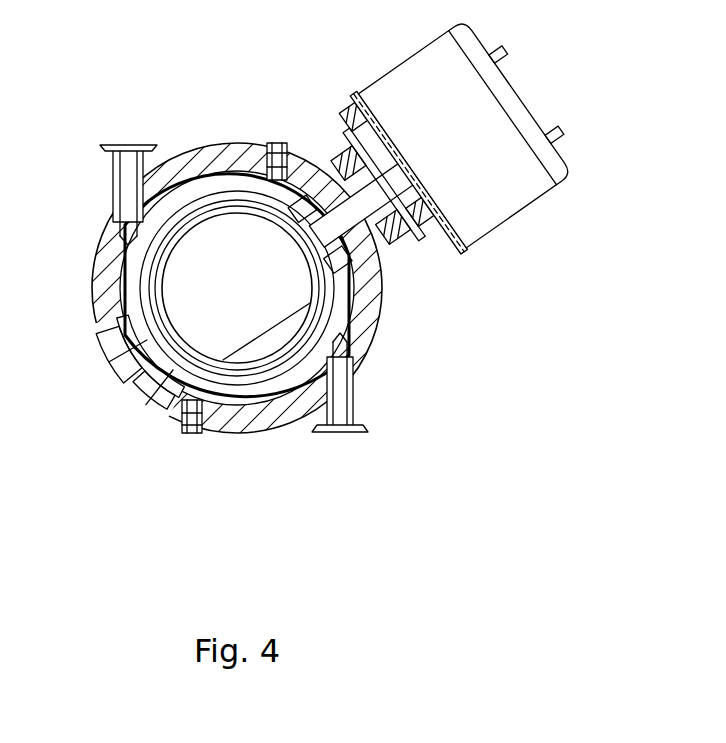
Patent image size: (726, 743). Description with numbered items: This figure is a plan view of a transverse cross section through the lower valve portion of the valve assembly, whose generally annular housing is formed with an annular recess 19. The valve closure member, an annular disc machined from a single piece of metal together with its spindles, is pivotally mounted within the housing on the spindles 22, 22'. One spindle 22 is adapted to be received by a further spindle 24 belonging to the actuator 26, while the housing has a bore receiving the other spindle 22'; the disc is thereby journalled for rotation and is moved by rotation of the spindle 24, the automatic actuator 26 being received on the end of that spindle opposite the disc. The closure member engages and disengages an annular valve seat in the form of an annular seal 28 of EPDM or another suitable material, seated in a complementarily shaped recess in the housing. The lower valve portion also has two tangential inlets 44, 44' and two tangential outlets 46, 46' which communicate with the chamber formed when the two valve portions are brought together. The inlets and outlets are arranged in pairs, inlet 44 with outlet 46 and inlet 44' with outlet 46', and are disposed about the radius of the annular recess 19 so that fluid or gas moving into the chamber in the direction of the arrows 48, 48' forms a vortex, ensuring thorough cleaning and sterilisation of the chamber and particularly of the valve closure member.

The annular recess 19 is at (252, 304).
The spindle 22 is at (286, 285).
The spindle 22' is at (114, 366).
The further spindle 24 is at (352, 196).
The actuator 26 is at (468, 131).
The annular seal 28 is at (130, 372).
The tangential inlet 44 is at (300, 135).
The tangential inlet 44' is at (158, 438).
The tangential outlet 46 is at (99, 195).
The tangential outlet 46' is at (380, 382).
The arrow 48 is at (236, 294).
The arrow 48' is at (237, 293).